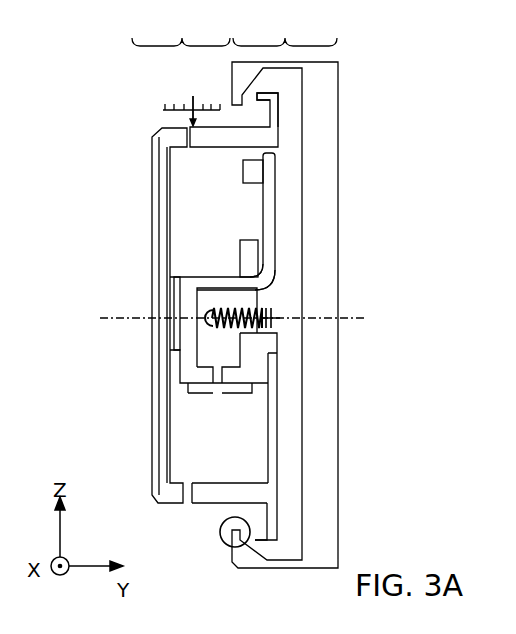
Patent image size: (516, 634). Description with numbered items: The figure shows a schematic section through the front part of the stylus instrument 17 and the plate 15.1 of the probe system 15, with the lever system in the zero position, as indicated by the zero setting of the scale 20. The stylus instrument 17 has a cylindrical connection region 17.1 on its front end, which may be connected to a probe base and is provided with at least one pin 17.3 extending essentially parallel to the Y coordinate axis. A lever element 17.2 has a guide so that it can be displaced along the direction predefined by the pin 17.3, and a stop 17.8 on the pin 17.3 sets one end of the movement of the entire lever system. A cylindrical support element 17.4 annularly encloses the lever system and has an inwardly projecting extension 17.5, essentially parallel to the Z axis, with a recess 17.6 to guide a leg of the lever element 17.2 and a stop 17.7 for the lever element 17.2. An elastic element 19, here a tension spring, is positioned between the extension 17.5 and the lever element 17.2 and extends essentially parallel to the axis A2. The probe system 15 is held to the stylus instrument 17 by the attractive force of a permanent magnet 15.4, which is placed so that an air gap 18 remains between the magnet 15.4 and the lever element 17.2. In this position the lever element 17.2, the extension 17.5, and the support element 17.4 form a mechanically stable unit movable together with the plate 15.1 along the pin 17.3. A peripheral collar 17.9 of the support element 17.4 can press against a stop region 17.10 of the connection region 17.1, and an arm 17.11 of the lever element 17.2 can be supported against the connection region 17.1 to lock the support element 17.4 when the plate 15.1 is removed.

The probe system 15 is at (181, 28).
The stylus instrument 17 is at (285, 28).
The scale 20 is at (150, 90).
The connection region 17.1 is at (330, 87).
The cylindrical support element 17.4 is at (270, 137).
The pin 17.3 is at (294, 176).
The arm 17.11 is at (270, 214).
The stop 17.7 is at (259, 255).
The recess 17.6 is at (280, 292).
The stop 17.8 is at (252, 170).
The extension 17.5 is at (273, 408).
The peripheral collar 17.9 is at (255, 541).
The stop region 17.10 is at (220, 533).
The elastic element 19 is at (227, 305).
The axis A2 is at (252, 319).
The air gap 18 is at (177, 262).
The plate 15.1 is at (152, 402).
The permanent magnet 15.4 is at (159, 326).
The lever element 17.2 is at (170, 363).